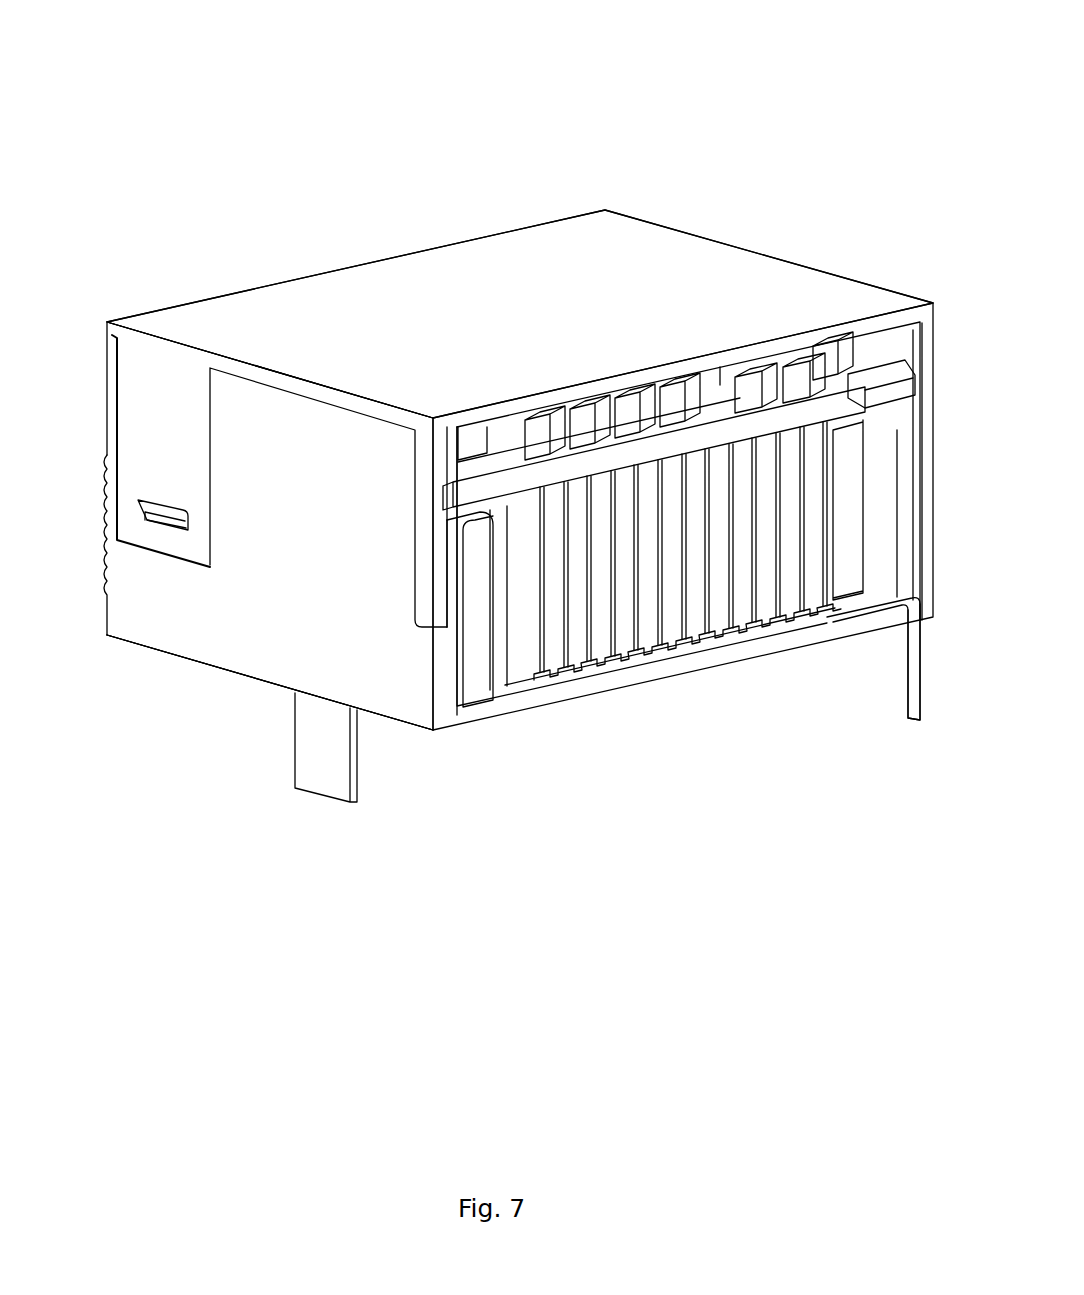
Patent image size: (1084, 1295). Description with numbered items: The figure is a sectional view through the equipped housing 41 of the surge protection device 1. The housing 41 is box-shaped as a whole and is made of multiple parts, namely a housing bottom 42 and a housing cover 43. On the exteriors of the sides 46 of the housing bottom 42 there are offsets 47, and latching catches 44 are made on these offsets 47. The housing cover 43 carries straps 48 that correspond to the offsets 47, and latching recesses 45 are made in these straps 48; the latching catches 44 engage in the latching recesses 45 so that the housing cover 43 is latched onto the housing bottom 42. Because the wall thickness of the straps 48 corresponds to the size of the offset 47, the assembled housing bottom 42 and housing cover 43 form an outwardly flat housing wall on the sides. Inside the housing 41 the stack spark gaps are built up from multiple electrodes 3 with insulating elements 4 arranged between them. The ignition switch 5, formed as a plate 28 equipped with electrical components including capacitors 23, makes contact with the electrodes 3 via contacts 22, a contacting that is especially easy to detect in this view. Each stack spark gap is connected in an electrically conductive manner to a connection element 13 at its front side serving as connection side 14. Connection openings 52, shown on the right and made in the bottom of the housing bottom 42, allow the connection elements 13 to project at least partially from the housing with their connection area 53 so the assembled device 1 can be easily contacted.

The surge protection device 1 is at (165, 110).
The housing 41 is at (318, 258).
The housing cover 43 is at (650, 242).
The housing bottom 42 is at (227, 648).
The sides 46 is at (287, 615).
The straps 48 is at (145, 437).
The latching recesses 45 is at (145, 503).
The latching catches 44 is at (160, 520).
The connection elements 13 is at (332, 788).
The connection area 53 is at (910, 717).
The offsets 47 is at (455, 600).
The contact 22 is at (693, 455).
The capacitors 23 is at (795, 385).
The plate 28 is at (857, 380).
The ignition switch 5 is at (893, 362).
The electrodes 3 is at (602, 625).
The insulating elements 4 is at (635, 640).
The connection side 14 is at (868, 522).
The connection openings 52 is at (910, 633).